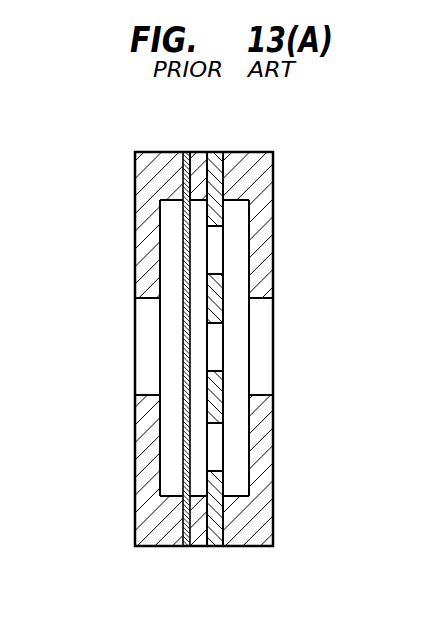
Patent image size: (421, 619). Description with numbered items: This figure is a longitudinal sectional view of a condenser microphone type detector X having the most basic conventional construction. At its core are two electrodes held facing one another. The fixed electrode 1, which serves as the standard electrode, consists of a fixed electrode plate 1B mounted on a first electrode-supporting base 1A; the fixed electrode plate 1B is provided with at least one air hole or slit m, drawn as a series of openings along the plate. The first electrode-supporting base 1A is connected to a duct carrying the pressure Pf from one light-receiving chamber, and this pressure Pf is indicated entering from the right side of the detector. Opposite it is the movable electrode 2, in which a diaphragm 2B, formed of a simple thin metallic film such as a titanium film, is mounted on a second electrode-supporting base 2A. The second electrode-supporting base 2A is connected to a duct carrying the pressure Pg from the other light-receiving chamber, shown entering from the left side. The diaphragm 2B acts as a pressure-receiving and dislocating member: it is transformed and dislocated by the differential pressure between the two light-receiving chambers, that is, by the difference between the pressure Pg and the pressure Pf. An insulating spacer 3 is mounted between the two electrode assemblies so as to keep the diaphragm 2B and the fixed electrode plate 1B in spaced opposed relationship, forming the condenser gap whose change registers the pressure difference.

The fixed electrode 1 is at (289, 349).
The first electrode-supporting base 1A is at (284, 201).
The fixed electrode plate 1B is at (234, 284).
The movable electrode 2 is at (118, 346).
The second electrode-supporting base 2A is at (126, 194).
The diaphragm 2B is at (174, 231).
The insulating spacer 3 is at (197, 144).
The air hole or slit m is at (227, 357).
The pressure from the other light-receiving chamber Pg is at (122, 348).
The pressure from said one light-receiving chamber Pf is at (289, 348).
The prior art device X is at (108, 465).